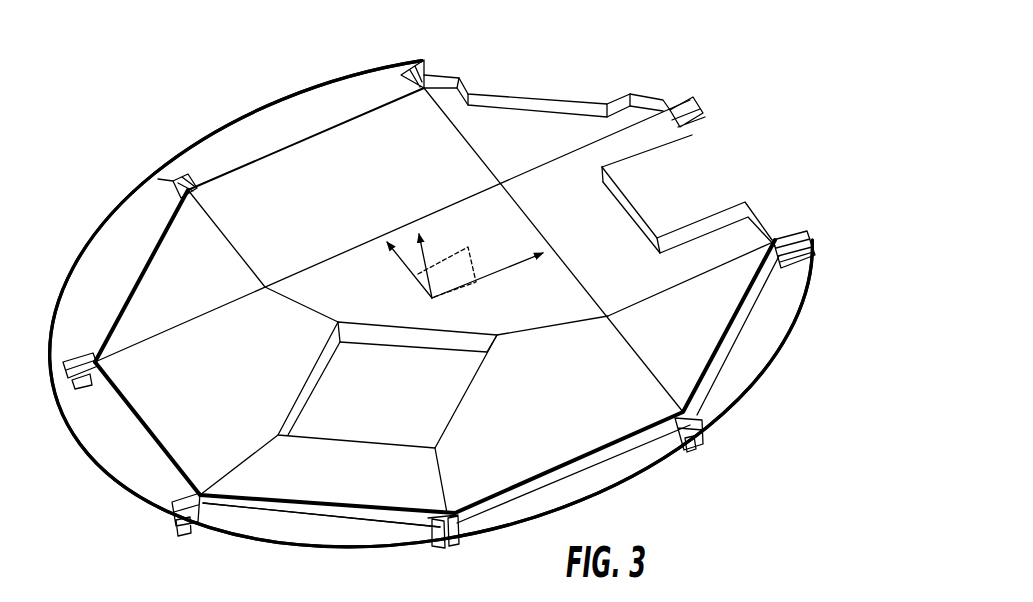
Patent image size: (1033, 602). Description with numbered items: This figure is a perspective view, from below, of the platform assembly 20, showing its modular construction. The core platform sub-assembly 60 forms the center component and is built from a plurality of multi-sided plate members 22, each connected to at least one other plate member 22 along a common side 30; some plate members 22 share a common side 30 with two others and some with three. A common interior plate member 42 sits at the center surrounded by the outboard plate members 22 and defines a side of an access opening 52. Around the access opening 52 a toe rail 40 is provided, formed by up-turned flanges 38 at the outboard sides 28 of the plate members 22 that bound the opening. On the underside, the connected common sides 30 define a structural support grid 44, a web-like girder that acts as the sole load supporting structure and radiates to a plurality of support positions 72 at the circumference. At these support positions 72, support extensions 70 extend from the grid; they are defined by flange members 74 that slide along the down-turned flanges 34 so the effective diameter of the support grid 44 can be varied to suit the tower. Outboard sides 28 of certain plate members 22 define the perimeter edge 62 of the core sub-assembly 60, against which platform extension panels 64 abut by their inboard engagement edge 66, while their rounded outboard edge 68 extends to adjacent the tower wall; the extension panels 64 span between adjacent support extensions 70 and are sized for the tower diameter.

The platform assembly 20 is at (186, 101).
The plate member 22 is at (365, 209).
The outboard side 28 is at (263, 155).
The common side 30 is at (366, 250).
The down-turned flange 34 is at (330, 367).
The up-turned flange 38 is at (527, 110).
The toe rail 40 is at (583, 98).
The common interior plate member 42 is at (485, 242).
The structural support grid 44 is at (568, 338).
The access opening 52 is at (718, 180).
The core platform sub-assembly 60 is at (333, 154).
The perimeter edge 62 is at (145, 247).
The platform extension panel 64 is at (760, 350).
The inboard engagement edge 66 is at (146, 300).
The rounded outboard edge 68 is at (248, 532).
The support extension 70 is at (788, 232).
The support position 72 is at (700, 458).
The flange member 74 is at (705, 117).